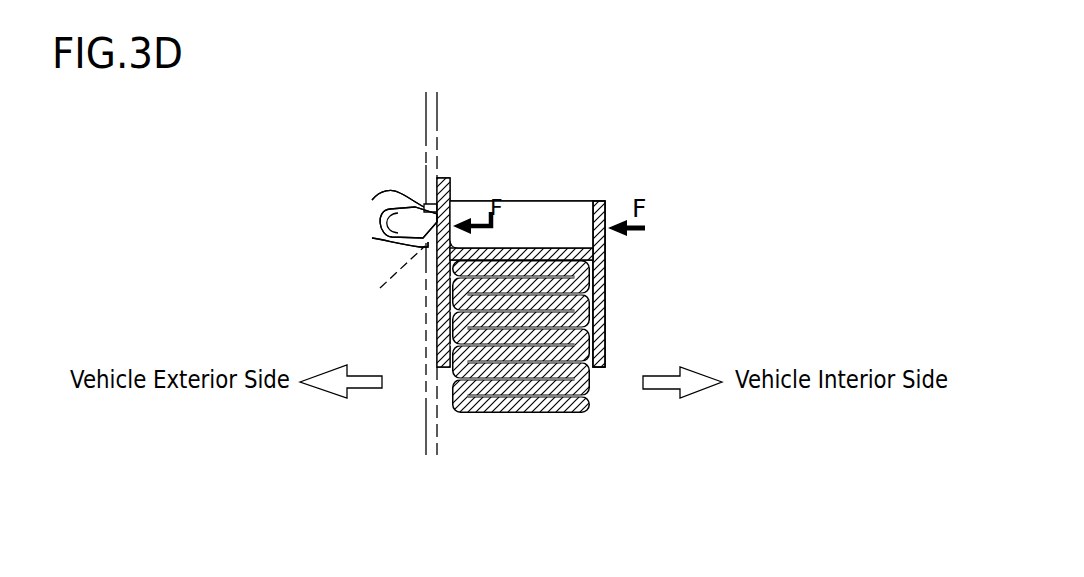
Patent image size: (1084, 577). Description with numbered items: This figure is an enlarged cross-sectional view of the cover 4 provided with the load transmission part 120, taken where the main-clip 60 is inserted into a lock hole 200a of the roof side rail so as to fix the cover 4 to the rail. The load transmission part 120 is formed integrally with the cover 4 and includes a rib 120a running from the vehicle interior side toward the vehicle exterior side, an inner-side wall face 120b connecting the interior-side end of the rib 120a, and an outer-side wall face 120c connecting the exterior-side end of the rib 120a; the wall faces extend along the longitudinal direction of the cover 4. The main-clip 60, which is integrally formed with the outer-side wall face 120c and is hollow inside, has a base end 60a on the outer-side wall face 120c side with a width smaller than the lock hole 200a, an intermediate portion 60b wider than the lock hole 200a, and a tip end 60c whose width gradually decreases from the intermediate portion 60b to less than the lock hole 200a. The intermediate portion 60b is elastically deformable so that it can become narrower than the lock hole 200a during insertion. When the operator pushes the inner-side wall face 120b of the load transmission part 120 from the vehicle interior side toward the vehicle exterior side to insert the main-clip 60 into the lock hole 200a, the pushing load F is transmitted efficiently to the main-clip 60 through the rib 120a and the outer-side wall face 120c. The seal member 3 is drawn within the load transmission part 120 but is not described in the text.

The seal member (hollow seal) 3 is at (530, 351).
The cover 4 is at (662, 315).
The main-clip 60 is at (258, 173).
The base end 60a is at (375, 238).
The intermediate portion 60b is at (372, 200).
The tip end 60c is at (380, 212).
The load transmission part 120 is at (583, 187).
The rib 120a is at (512, 240).
The inner-side wall face 120b is at (598, 232).
The outer-side wall face 120c is at (447, 187).
The lock hole 200a is at (366, 281).